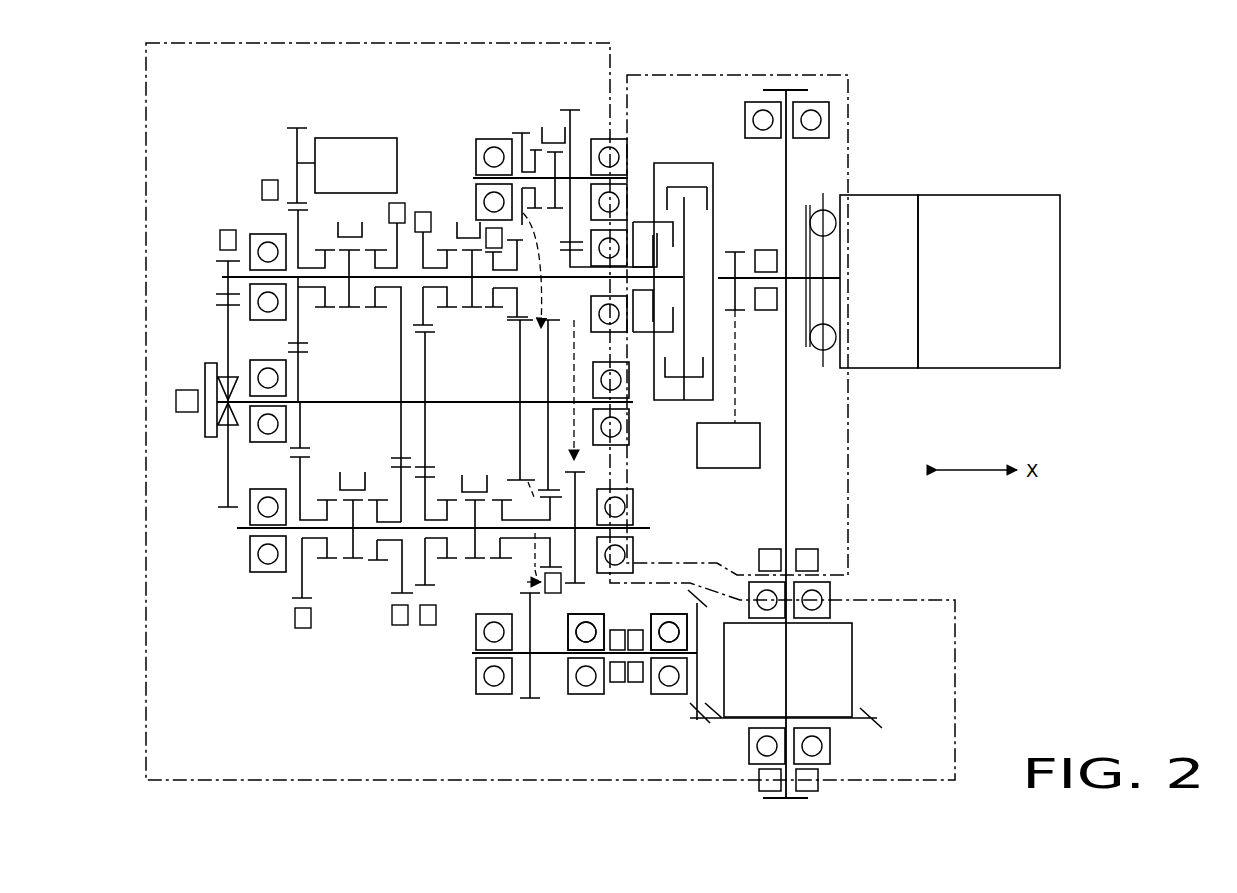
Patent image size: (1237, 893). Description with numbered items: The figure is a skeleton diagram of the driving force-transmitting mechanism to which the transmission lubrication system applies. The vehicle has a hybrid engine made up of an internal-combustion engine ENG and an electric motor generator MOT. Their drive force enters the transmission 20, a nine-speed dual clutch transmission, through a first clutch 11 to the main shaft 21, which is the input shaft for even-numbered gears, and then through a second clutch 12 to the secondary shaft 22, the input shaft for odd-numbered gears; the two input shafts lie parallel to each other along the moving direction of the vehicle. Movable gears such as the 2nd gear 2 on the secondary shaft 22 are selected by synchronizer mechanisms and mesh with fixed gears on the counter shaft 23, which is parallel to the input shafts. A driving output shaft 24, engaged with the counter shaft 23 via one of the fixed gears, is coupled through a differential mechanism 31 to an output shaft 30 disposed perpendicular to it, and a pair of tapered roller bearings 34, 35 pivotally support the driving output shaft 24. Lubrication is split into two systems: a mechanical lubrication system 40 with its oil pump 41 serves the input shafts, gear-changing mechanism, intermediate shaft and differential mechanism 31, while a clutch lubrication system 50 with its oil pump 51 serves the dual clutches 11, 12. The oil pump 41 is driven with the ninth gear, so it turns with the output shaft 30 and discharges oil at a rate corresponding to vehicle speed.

The 2nd gear 2 is at (530, 645).
The first clutch 11 is at (697, 187).
The second clutch 12 is at (637, 222).
The transmission 20 is at (228, 134).
The main shaft 21 is at (222, 277).
The secondary shaft 22 is at (237, 528).
The counter shaft 23 is at (340, 402).
The driving output shaft 24 is at (557, 657).
The output shaft 30 is at (788, 437).
The differential mechanism 31 is at (852, 670).
The tapered roller bearing 34 is at (578, 614).
The tapered roller bearing 35 is at (677, 614).
The mechanical lubrication system 40 is at (143, 714).
The oil pump 41 is at (335, 138).
The clutch lubrication system 50 is at (852, 527).
The oil pump 51 is at (747, 423).
The electric motor generator MOT is at (860, 195).
The internal-combustion engine ENG is at (1003, 195).